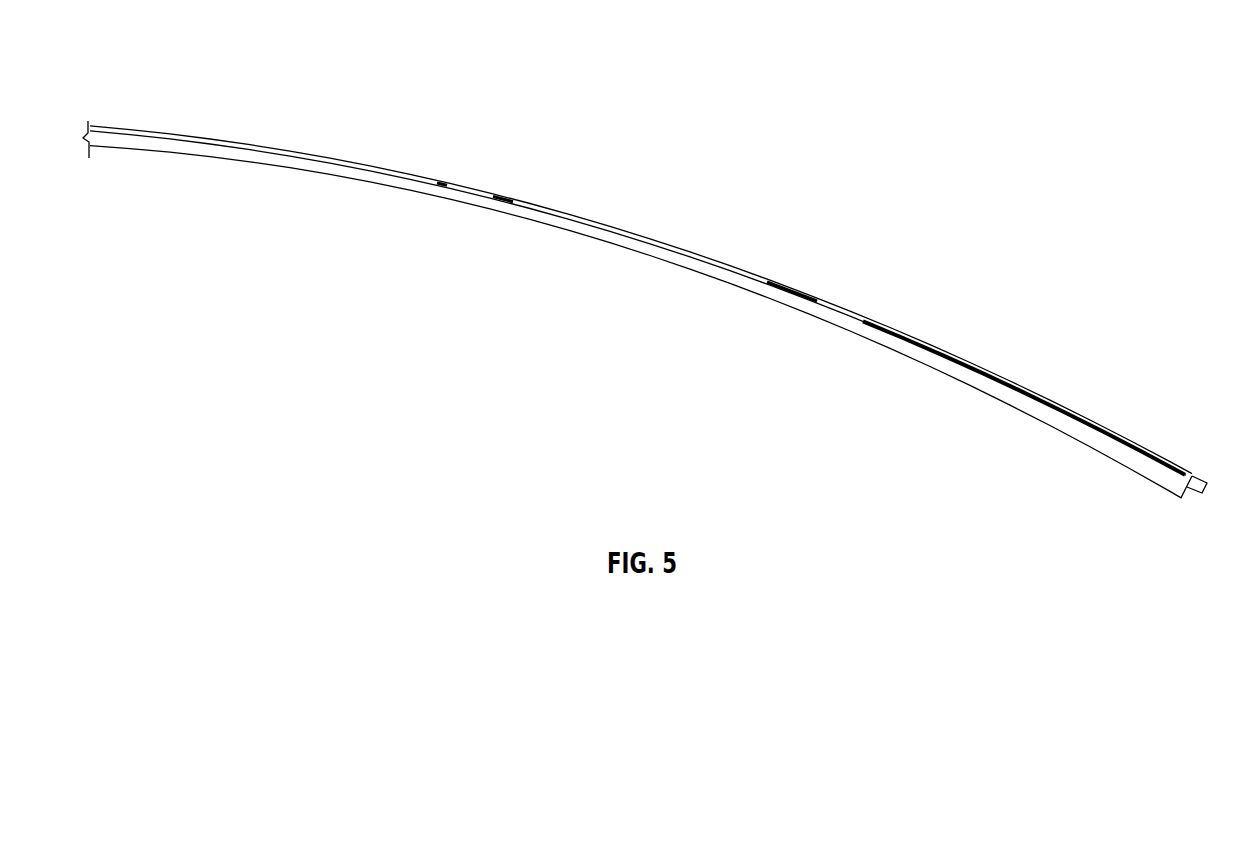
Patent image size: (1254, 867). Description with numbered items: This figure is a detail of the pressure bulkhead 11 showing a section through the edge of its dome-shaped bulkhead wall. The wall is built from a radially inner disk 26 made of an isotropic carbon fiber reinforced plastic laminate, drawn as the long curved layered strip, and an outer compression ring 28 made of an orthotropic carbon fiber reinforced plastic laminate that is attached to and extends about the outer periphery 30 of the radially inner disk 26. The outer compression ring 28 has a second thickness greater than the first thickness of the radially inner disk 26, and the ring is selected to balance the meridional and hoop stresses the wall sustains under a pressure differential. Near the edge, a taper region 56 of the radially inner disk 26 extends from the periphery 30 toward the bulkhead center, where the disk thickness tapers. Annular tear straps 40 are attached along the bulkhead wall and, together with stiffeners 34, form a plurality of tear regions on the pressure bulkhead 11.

The pressure bulkhead 11 is at (707, 53).
The radially inner disk 26 is at (270, 148).
The annular tear straps 40 is at (650, 240).
The outer periphery 30 is at (1168, 462).
The taper region 56 is at (1165, 445).
The outer compression ring 28 is at (1200, 476).
The stiffeners 34 is at (1081, 441).